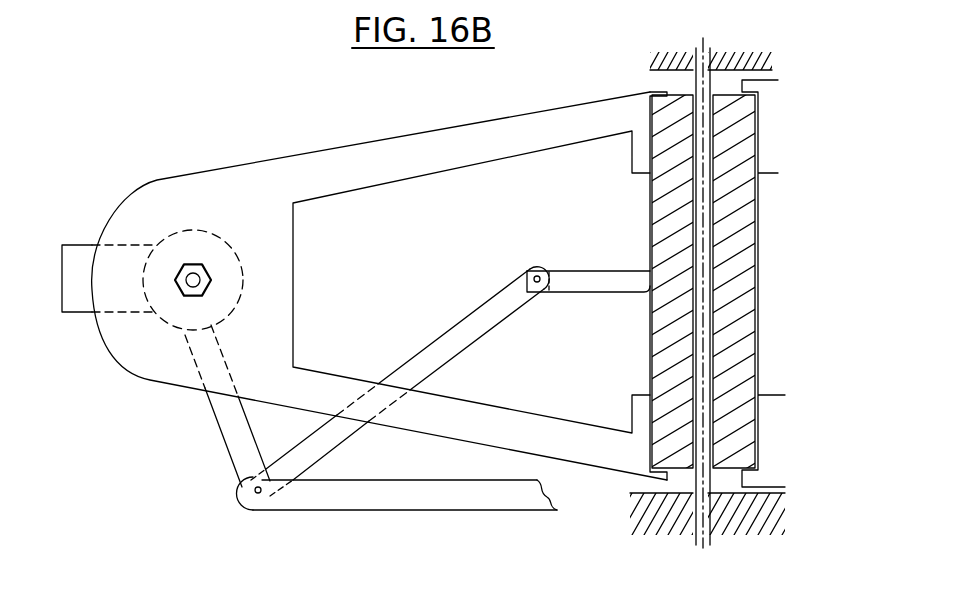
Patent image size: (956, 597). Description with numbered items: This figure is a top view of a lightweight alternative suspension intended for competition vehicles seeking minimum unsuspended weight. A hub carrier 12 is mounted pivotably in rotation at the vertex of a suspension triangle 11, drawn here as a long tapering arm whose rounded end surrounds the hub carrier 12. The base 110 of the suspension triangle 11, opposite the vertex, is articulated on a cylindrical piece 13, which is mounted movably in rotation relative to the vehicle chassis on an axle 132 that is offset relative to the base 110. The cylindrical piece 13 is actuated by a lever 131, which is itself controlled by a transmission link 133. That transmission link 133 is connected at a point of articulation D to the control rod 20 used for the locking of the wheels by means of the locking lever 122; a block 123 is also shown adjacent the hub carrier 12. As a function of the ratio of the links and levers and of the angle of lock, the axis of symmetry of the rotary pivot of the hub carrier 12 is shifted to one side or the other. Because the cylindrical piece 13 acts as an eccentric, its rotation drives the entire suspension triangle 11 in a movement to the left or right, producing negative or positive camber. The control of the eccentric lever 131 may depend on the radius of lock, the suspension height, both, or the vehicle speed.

The suspension triangle 11 is at (498, 140).
The hub carrier 12 is at (183, 228).
The cylindrical piece 13 is at (665, 218).
The control rod 20 is at (432, 497).
The base 110 is at (645, 155).
The locking lever 122 is at (227, 413).
The stop block 123 is at (80, 303).
The lever 131 is at (605, 283).
The axle 132 is at (693, 82).
The transmission link 133 is at (423, 345).
The point of articulation D is at (243, 445).